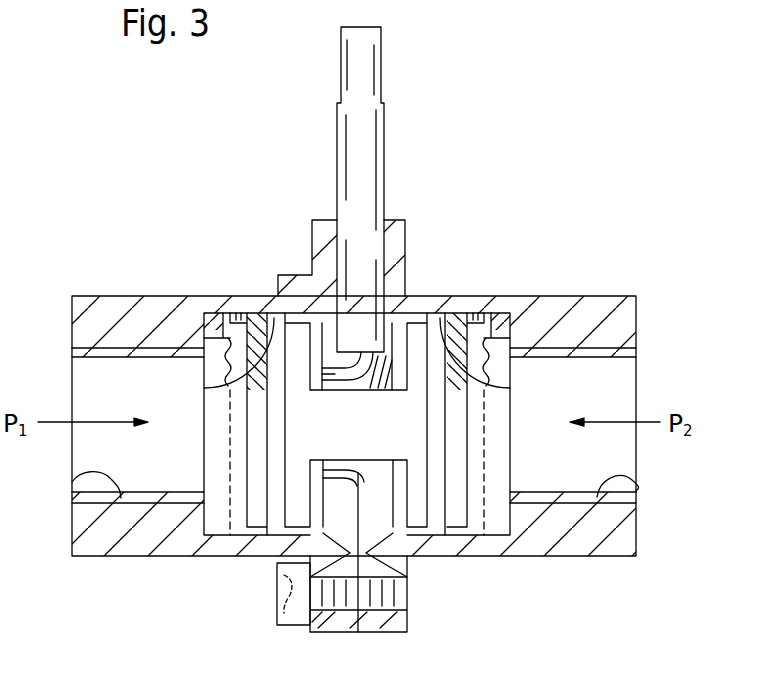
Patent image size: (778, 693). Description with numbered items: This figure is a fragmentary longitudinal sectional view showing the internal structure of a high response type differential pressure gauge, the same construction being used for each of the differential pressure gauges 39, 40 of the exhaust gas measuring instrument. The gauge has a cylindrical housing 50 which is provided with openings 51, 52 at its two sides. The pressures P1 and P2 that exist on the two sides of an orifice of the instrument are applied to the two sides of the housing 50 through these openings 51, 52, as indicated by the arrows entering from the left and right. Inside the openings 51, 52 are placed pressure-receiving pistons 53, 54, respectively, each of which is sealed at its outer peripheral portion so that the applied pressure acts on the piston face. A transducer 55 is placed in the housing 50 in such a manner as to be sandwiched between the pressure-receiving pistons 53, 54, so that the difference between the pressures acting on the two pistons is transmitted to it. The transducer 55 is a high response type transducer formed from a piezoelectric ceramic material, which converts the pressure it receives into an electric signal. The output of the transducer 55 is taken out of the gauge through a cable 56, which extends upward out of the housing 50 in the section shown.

The differential pressure gauge 39 is at (484, 234).
The differential pressure gauge 40 is at (356, 472).
The housing 50 is at (576, 296).
The opening 51 is at (72, 482).
The opening 52 is at (637, 482).
The pressure-receiving piston 53 is at (215, 456).
The pressure-receiving piston 54 is at (503, 455).
The transducer 55 is at (376, 430).
The cable 56 is at (352, 130).